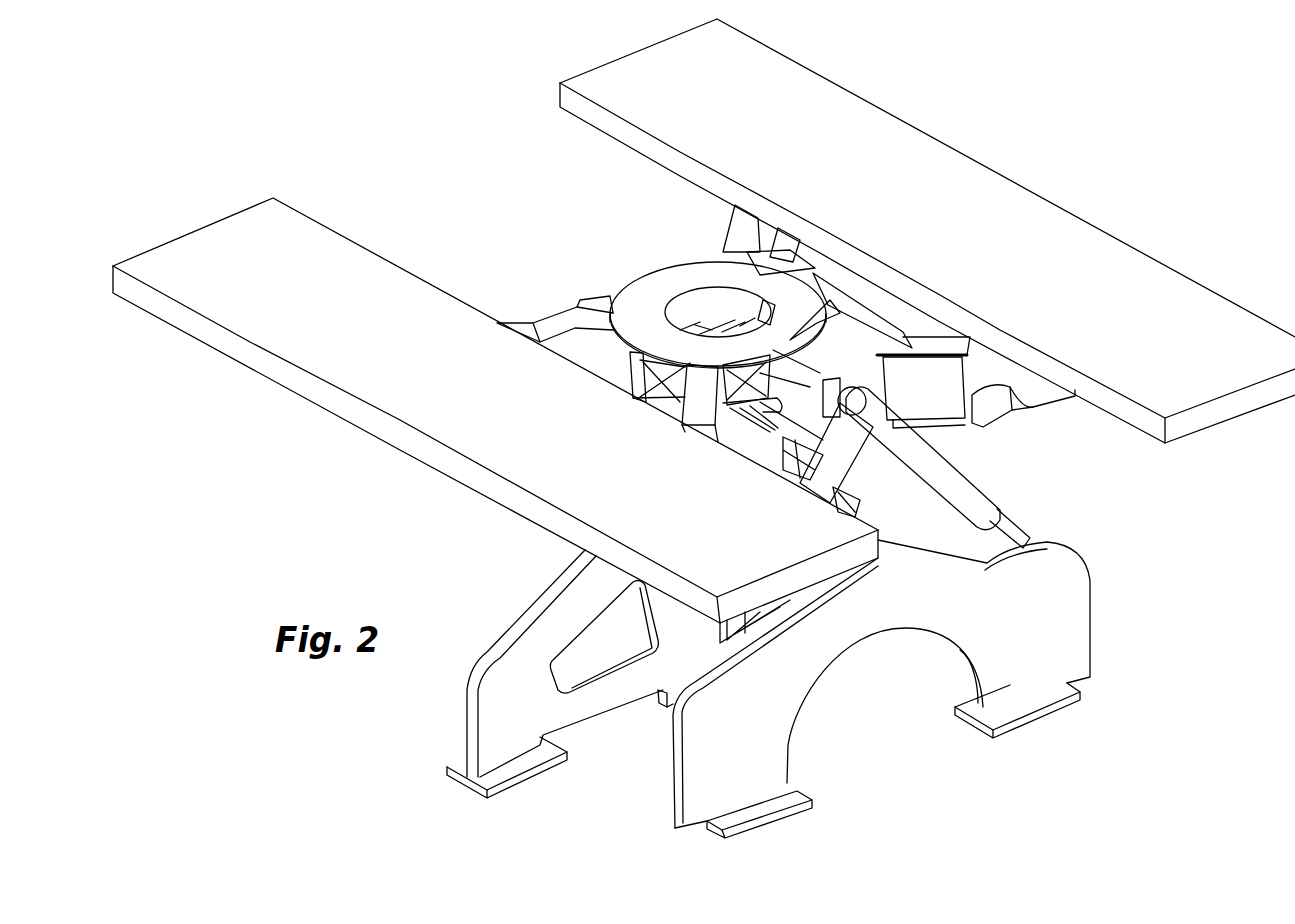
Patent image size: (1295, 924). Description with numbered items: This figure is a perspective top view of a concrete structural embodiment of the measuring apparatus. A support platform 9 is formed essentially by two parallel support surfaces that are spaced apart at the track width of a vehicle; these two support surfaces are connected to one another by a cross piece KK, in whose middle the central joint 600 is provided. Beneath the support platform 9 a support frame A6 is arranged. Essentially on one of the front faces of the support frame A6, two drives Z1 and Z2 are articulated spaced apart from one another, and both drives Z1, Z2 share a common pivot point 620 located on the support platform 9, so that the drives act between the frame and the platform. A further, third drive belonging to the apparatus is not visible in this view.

The support platform 9 is at (353, 405).
The central joint 600 is at (707, 312).
The cross piece KK is at (580, 335).
The common pivot point 620 is at (868, 392).
The drive Z1 is at (828, 447).
The drive Z2 is at (938, 467).
The support frame A6 is at (1067, 622).